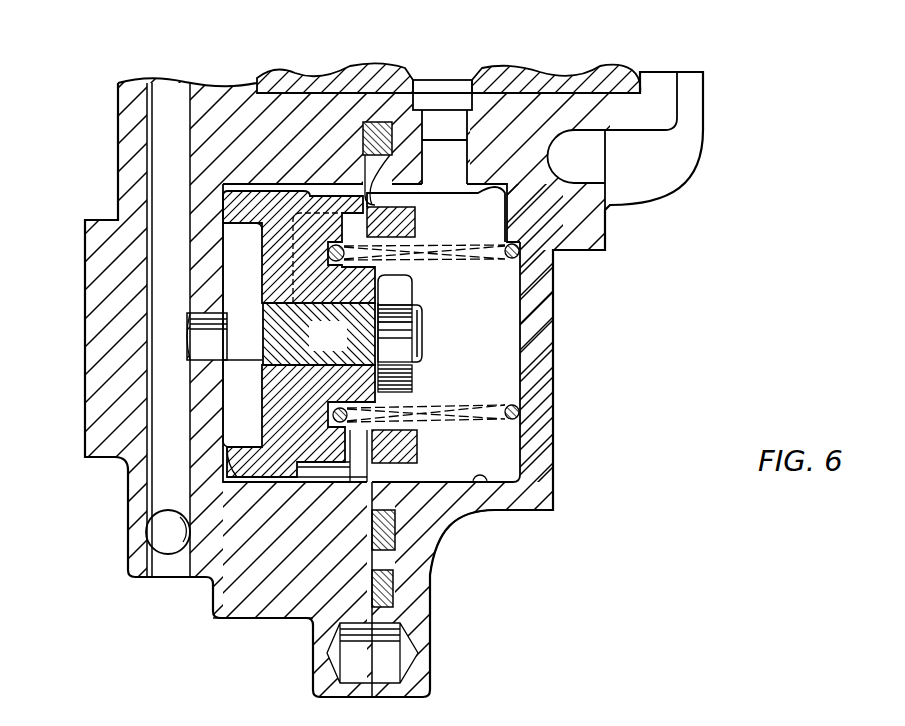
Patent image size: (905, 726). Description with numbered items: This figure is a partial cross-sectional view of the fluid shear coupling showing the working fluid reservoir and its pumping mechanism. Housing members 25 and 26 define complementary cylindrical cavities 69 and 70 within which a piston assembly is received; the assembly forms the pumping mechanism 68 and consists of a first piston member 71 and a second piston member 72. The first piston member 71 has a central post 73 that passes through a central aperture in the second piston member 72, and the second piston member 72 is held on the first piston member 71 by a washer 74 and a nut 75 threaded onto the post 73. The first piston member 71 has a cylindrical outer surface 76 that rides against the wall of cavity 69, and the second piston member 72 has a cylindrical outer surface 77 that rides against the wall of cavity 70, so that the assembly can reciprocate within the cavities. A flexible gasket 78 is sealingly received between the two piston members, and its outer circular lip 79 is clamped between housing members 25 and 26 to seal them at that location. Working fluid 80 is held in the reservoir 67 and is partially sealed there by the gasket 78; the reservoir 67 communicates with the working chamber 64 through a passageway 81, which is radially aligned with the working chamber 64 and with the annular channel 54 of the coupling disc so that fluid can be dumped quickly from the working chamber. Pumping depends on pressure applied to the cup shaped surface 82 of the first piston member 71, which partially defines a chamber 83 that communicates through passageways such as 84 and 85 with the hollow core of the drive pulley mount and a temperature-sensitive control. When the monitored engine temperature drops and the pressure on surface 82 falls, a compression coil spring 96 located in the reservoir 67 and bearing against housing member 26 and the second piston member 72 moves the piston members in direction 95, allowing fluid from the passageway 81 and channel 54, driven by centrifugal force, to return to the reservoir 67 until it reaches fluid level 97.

The housing member 25 is at (272, 610).
The housing member 26 is at (542, 460).
The annular channel 54 is at (450, 95).
The working chamber 64 is at (583, 90).
The reservoir 67 is at (505, 337).
The pumping mechanism 68 is at (287, 510).
The cylindrical cavity 69 is at (333, 480).
The cylindrical cavity 70 is at (487, 513).
The first piston member 71 is at (258, 480).
The second piston member 72 is at (420, 447).
The central post 73 is at (343, 348).
The washer 74 is at (378, 338).
The nut 75 is at (402, 292).
The cylindrical outer surface 76 is at (253, 187).
The cylindrical outer surface 77 is at (420, 490).
The flexible gasket 78 is at (337, 207).
The outer circular lip 79 is at (393, 530).
The working fluid 80 is at (490, 228).
The passageway 81 is at (452, 158).
The cup shaped surface 82 is at (262, 375).
The chamber 83 is at (233, 253).
The passageway 84 is at (190, 335).
The passageway 85 is at (160, 135).
The direction 95 is at (440, 372).
The compression coil spring 96 is at (523, 407).
The fluid level 97 is at (480, 190).